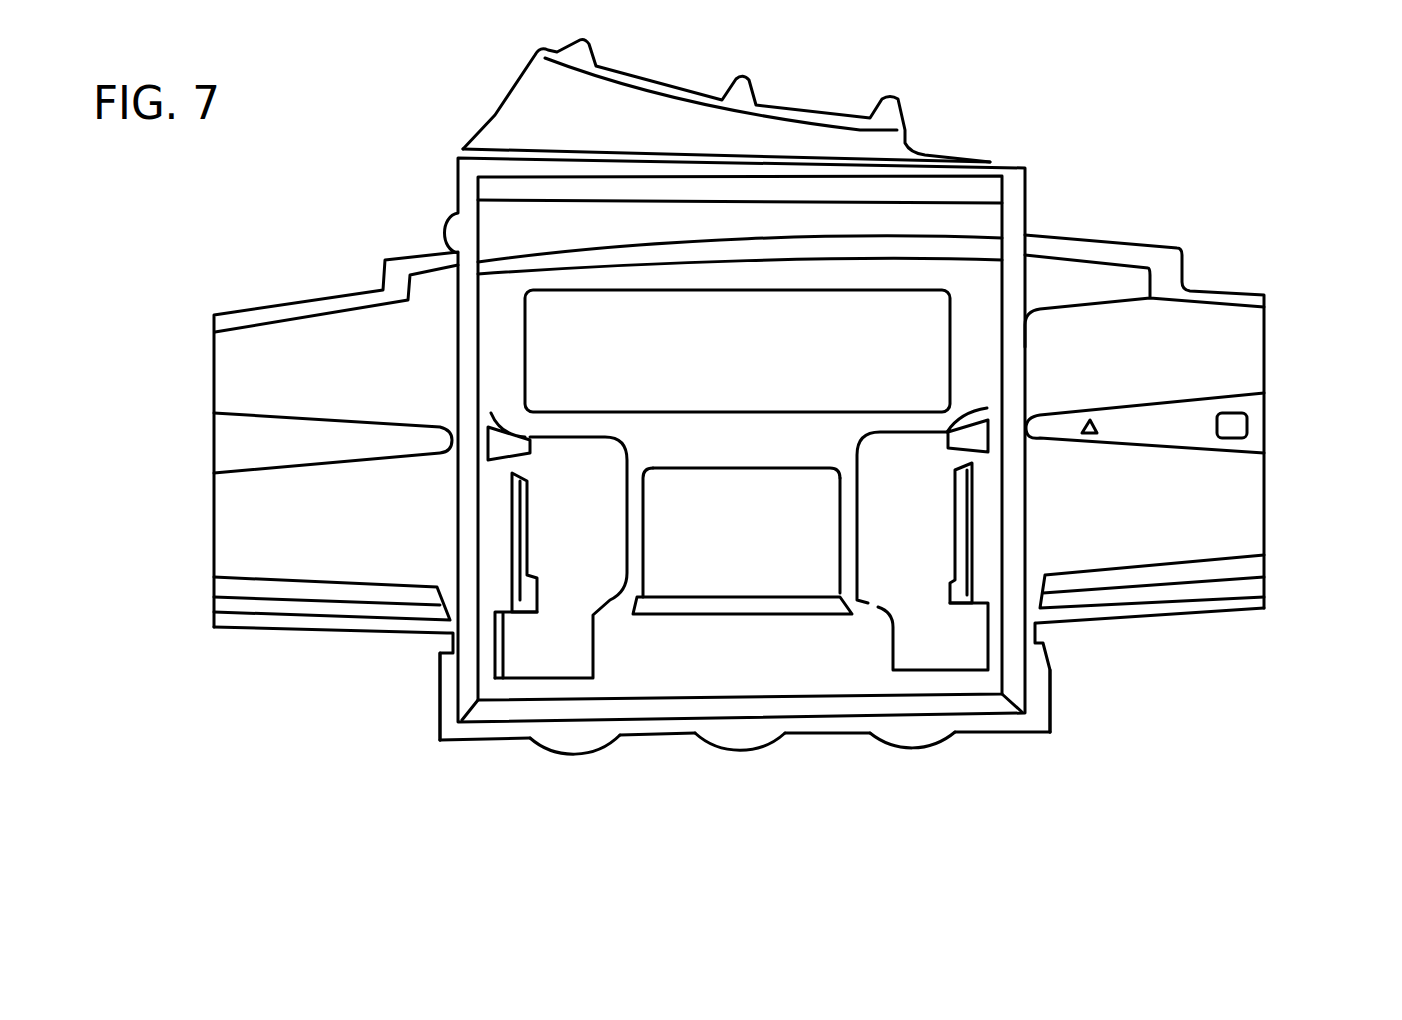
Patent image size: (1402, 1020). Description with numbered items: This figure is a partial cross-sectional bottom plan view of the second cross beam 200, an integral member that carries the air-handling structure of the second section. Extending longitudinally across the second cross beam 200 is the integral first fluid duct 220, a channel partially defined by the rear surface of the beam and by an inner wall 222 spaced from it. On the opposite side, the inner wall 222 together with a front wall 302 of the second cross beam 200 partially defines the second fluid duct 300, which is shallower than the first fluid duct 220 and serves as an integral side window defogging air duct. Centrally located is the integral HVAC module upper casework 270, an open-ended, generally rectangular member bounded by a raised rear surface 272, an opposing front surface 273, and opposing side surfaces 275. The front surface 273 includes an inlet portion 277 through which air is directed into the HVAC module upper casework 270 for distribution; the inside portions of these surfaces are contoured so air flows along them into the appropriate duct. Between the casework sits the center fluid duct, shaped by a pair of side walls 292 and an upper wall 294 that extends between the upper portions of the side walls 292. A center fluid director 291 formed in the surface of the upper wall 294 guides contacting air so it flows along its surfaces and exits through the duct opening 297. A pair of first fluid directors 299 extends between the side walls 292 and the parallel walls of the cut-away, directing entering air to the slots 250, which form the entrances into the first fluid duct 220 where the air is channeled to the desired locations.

The second cross beam 200 is at (1232, 617).
The first fluid duct 220 is at (323, 540).
The inner wall 222 is at (1198, 415).
The slots 250 is at (535, 590).
The HVAC module upper casework 270 is at (733, 752).
The rear surface 272 is at (825, 742).
The front surface 273 is at (983, 153).
The side surfaces 275 is at (448, 713).
The inlet portion 277 is at (497, 113).
The center fluid director 291 is at (717, 558).
The side walls 292 is at (637, 567).
The upper wall 294 is at (737, 558).
The duct opening 297 is at (770, 607).
The first fluid directors 299 is at (568, 558).
The second fluid duct 300 is at (1233, 343).
The front wall 302 is at (288, 343).